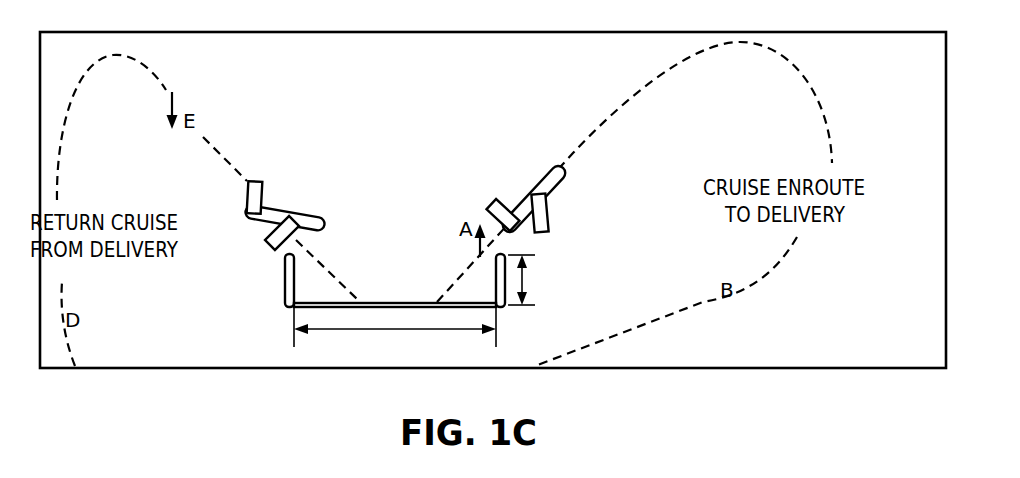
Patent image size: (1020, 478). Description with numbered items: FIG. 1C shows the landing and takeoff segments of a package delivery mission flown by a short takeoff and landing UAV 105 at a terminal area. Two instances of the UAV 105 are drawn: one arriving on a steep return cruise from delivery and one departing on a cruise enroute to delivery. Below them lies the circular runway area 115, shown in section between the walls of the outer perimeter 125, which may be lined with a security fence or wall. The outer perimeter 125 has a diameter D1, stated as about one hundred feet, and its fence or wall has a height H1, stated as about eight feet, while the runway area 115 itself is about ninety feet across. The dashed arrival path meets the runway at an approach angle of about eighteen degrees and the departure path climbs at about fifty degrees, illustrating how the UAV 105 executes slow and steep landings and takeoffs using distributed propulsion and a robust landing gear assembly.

The UAV 105 is at (288, 172).
The circular runway area 115 is at (407, 240).
The outer perimeter 125 is at (285, 282).